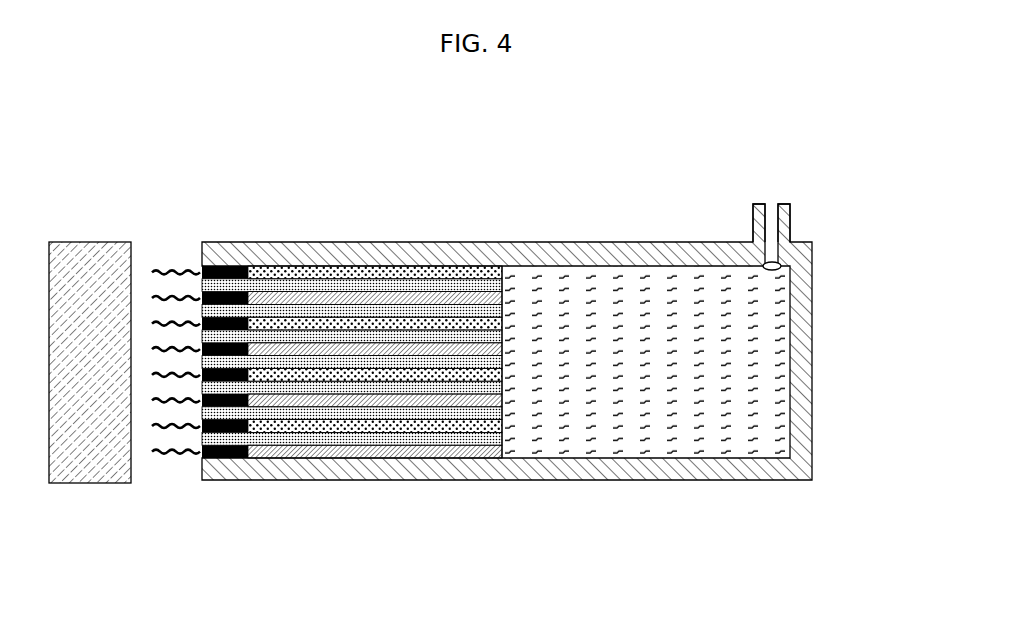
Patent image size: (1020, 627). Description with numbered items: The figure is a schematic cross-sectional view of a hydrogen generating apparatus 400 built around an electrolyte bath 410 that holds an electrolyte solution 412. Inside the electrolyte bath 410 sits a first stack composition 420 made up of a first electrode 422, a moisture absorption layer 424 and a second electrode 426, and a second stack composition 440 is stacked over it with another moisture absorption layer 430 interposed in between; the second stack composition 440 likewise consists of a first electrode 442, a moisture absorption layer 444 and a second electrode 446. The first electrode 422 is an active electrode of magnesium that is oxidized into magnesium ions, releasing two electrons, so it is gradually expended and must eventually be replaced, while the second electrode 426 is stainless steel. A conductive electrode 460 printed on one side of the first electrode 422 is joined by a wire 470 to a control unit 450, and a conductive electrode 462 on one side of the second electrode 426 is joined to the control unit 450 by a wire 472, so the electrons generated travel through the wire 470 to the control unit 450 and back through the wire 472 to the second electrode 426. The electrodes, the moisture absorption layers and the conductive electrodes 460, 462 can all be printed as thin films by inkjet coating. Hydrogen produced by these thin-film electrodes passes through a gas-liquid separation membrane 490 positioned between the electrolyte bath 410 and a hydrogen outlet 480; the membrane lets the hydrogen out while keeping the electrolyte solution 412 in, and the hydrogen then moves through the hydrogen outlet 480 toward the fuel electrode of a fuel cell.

The hydrogen generating apparatus 400 is at (645, 125).
The electrolyte bath 410 is at (812, 398).
The electrolyte solution 412 is at (768, 447).
The first stack composition 420 is at (373, 499).
The first electrode 422 is at (375, 486).
The moisture absorption layer 424 is at (450, 438).
The second electrode 426 is at (450, 425).
The moisture absorption layer 430 is at (382, 417).
The second stack composition 440 is at (444, 472).
The first electrode 442 is at (500, 403).
The moisture absorption layer 444 is at (500, 387).
The second electrode 446 is at (500, 373).
The control unit 450 is at (88, 484).
The conductive electrode 460 is at (231, 457).
The conductive electrode 462 is at (263, 434).
The wire 470 is at (185, 458).
The wire 472 is at (157, 437).
The hydrogen outlet 480 is at (782, 190).
The gas-liquid separation membrane 490 is at (782, 267).